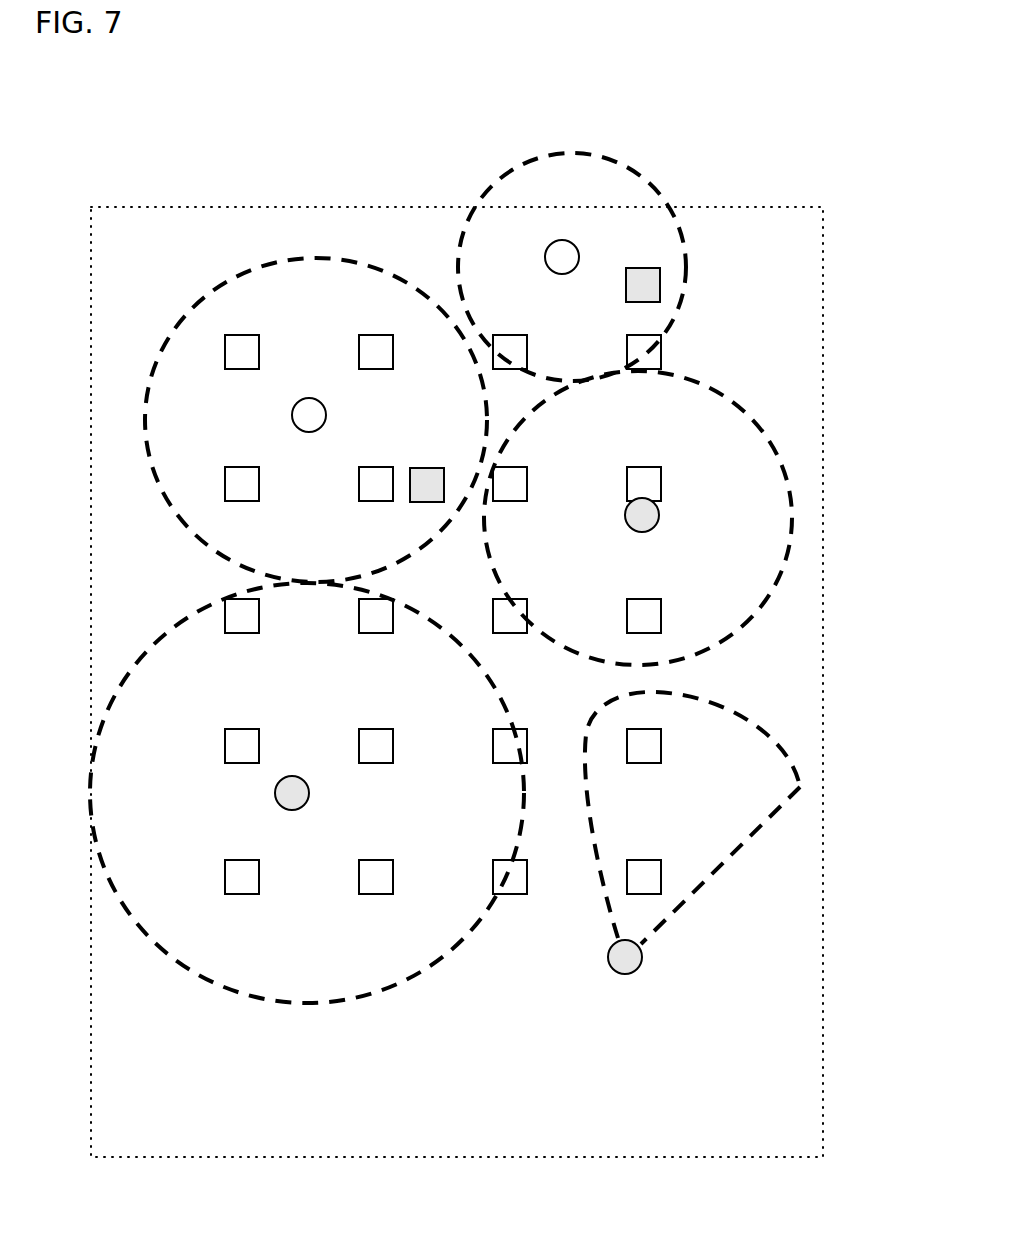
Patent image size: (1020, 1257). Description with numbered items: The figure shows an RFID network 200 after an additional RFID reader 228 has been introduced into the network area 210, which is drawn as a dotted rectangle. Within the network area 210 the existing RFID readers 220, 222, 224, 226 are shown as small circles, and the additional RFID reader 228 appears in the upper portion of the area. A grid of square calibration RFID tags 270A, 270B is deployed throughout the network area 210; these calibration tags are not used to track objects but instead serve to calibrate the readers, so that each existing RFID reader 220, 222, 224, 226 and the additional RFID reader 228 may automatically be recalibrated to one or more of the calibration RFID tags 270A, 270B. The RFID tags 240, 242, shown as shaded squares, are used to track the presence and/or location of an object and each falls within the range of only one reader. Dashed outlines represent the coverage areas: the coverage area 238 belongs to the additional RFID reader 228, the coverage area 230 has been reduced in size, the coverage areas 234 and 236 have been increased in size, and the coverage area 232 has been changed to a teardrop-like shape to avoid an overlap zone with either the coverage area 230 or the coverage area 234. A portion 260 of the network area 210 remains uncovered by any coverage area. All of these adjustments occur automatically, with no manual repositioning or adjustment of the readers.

The RFID network 200 is at (477, 620).
The network area 210 is at (810, 207).
The portion of network area 260 is at (390, 238).
The calibration RFID tag 270A is at (232, 337).
The calibration RFID tag 270B is at (363, 336).
The RFID tag 240 is at (658, 268).
The RFID tag 242 is at (420, 482).
The additional RFID reader 228 is at (548, 248).
The RFID reader 226 is at (297, 408).
The RFID reader 220 is at (658, 522).
The RFID reader 224 is at (275, 797).
The RFID reader 222 is at (643, 950).
The coverage area 238 is at (572, 247).
The coverage area 236 is at (170, 505).
The coverage area 234 is at (130, 920).
The coverage area 230 is at (685, 518).
The coverage area 232 is at (740, 818).